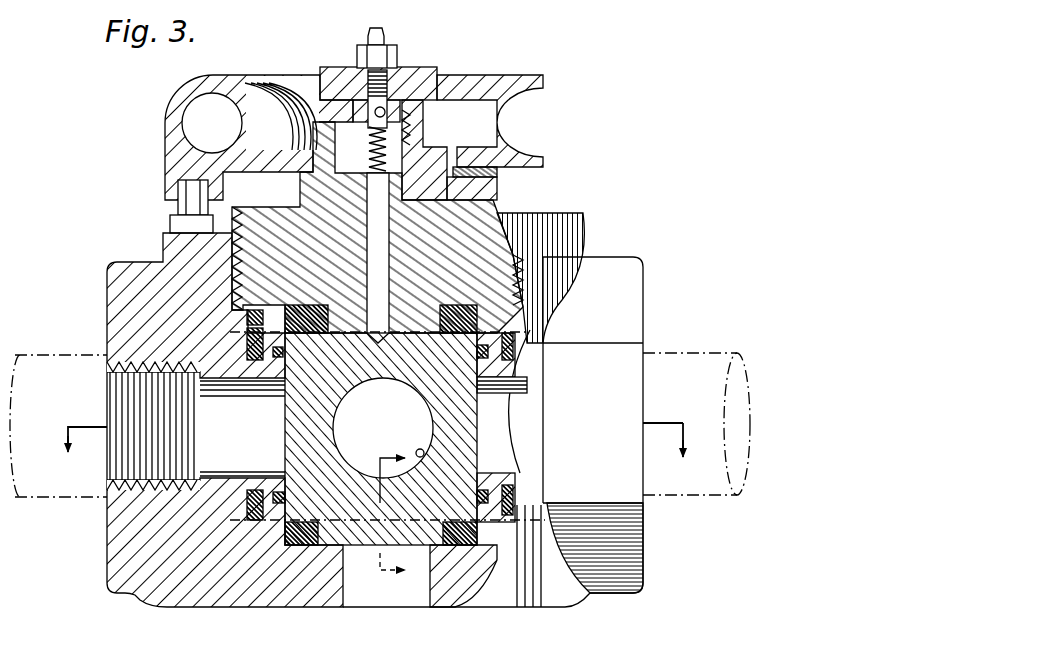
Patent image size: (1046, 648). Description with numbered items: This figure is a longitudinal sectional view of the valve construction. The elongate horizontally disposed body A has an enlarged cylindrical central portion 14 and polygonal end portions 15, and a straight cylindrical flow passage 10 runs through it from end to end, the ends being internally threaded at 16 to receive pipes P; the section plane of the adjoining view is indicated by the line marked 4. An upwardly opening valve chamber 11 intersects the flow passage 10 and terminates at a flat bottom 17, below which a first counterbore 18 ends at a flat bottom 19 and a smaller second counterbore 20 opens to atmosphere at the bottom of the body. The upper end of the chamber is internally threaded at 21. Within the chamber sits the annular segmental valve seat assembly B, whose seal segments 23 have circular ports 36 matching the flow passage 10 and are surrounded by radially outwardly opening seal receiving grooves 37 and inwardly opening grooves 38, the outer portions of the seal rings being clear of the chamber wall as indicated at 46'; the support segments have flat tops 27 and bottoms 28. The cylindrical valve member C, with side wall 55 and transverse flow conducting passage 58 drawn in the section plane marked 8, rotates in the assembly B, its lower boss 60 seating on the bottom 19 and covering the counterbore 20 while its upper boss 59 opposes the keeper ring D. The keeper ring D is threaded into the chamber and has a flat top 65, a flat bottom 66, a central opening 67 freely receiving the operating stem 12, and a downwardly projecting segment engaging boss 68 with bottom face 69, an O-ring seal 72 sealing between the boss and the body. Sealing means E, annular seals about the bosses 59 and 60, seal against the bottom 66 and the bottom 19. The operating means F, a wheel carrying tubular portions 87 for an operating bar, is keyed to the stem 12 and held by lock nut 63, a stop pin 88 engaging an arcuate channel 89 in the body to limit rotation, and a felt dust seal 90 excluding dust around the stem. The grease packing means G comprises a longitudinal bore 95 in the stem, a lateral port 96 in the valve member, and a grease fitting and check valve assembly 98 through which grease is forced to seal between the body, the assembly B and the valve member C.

The operating means F is at (163, 90).
The tubular portions 87 is at (183, 118).
The stop pin 88 is at (190, 206).
The arcuate channel 89 is at (180, 228).
The grease packing means G is at (440, 68).
The grease fitting and check valve assembly 98 is at (397, 62).
The lock nut 63 is at (438, 123).
The annular felt dust seal 90 is at (478, 172).
The keeper ring D is at (500, 199).
The operating stem 12 is at (418, 262).
The flat top 65 is at (266, 195).
The internal threads 21 is at (233, 256).
The central opening 67 is at (430, 230).
The longitudinal bore 95 is at (363, 212).
The body A is at (586, 221).
The polygonal end portions 15 is at (132, 597).
The internal threads 16 is at (140, 482).
The flow passage 10 is at (215, 386).
The valve chamber 11 is at (255, 490).
The seal segments 23 is at (252, 372).
The cylindrical side wall 55 is at (500, 432).
The lower boss 60 is at (422, 555).
The ports 36 is at (287, 417).
The lateral port 96 is at (332, 378).
The tops 27 is at (410, 328).
The seal receiving grooves 38 is at (480, 356).
The bottoms 28 is at (340, 522).
The flow conducting passage 58 is at (426, 455).
The section line 8- 8 is at (392, 516).
The valve member C is at (356, 553).
The sealing means E is at (286, 303).
The flat bottom 66 is at (310, 308).
The upper boss 59 is at (450, 312).
The outer portions clear of chamber wall 46' is at (400, 428).
The segment engaging boss 68 is at (247, 316).
The bottom face 69 is at (247, 342).
The flat bottom 17 is at (263, 505).
The seal receiving grooves 37 is at (268, 340).
The O-ring seal 72 is at (517, 318).
The first counterbore 18 is at (467, 508).
The cylindrical central portion 14 is at (307, 598).
The flat bottom 19 is at (377, 595).
The second counterbore 20 is at (376, 596).
The valve seat assembly B is at (242, 498).
The pipes P is at (50, 352).
The section line 4- 4 is at (372, 446).